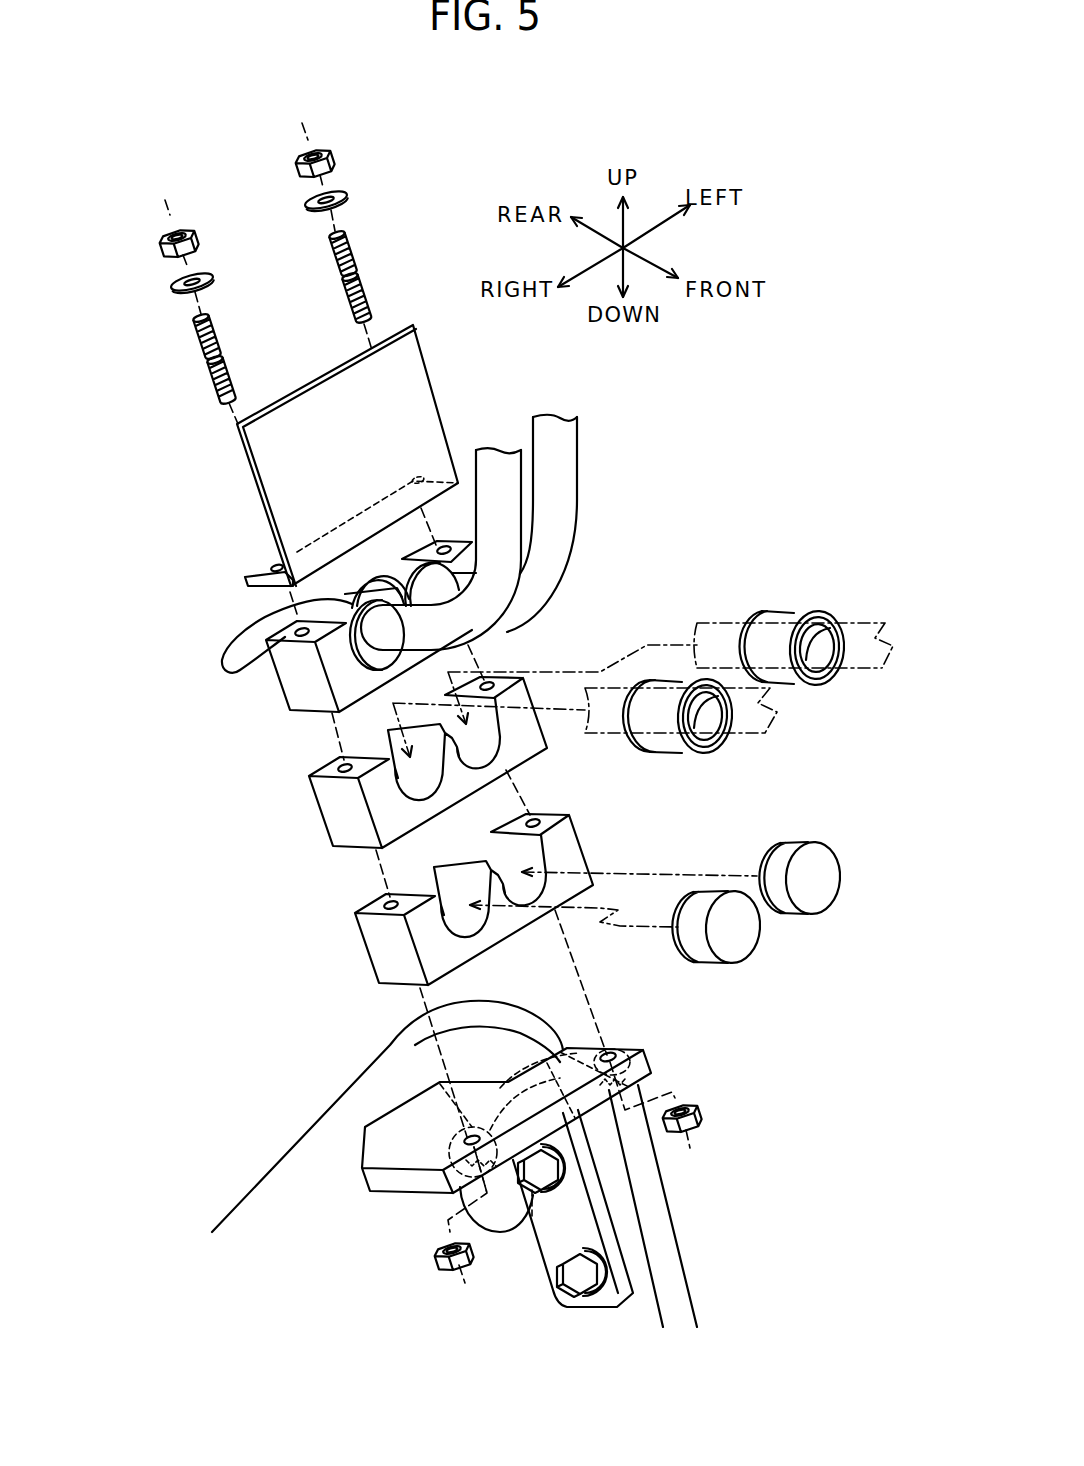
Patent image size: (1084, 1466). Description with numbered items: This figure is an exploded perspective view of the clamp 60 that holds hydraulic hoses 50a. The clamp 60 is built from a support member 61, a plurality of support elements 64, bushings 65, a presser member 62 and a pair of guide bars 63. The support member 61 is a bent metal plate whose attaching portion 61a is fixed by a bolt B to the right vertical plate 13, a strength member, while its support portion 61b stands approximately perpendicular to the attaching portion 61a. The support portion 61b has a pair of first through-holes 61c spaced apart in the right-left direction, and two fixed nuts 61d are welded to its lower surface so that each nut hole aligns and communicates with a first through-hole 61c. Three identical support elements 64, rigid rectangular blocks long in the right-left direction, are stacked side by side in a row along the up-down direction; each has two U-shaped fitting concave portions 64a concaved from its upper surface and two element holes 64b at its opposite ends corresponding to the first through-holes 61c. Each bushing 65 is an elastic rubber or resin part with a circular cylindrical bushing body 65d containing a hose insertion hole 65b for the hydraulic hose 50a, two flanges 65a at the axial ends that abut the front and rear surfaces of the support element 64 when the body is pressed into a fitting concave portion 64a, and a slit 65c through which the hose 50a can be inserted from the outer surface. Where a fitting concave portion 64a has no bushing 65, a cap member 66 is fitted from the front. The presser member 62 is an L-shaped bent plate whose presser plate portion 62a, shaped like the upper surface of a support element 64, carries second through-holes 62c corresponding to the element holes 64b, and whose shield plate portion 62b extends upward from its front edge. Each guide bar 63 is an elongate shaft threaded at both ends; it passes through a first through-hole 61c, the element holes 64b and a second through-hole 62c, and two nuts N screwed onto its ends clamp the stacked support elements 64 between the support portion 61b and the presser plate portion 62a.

The right vertical plate 13 is at (272, 1167).
The hydraulic hose 50a is at (490, 478).
The clamp 60 is at (739, 468).
The support member 61 is at (519, 1167).
The attaching portion 61a is at (547, 1258).
The support portion 61b is at (403, 1182).
The first through-holes 61c is at (614, 1054).
The fixed nuts 61d is at (637, 1093).
The presser member 62 is at (288, 460).
The presser plate portion 62a is at (246, 583).
The shield plate portion 62b is at (263, 527).
The second through-holes 62c is at (418, 478).
The guide bars 63 is at (367, 287).
The support elements 64 is at (493, 770).
The fitting concave portions 64a is at (537, 852).
The element holes 64b is at (534, 819).
The bushing 65 is at (618, 665).
The flanges 65a is at (730, 740).
The hose insertion hole 65b is at (782, 624).
The slit 65c is at (818, 652).
The bushing body 65d is at (752, 628).
The cap member 66 is at (732, 937).
The nuts N is at (335, 150).
The bolt B is at (602, 1281).